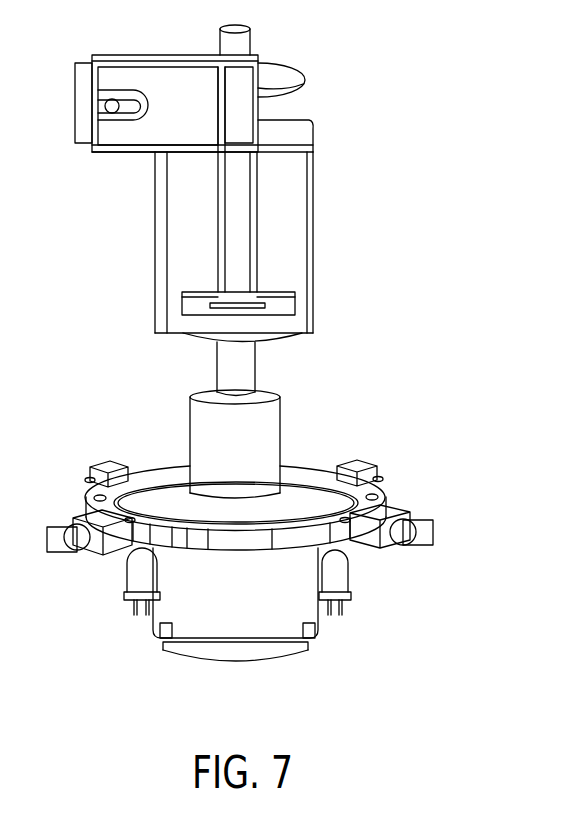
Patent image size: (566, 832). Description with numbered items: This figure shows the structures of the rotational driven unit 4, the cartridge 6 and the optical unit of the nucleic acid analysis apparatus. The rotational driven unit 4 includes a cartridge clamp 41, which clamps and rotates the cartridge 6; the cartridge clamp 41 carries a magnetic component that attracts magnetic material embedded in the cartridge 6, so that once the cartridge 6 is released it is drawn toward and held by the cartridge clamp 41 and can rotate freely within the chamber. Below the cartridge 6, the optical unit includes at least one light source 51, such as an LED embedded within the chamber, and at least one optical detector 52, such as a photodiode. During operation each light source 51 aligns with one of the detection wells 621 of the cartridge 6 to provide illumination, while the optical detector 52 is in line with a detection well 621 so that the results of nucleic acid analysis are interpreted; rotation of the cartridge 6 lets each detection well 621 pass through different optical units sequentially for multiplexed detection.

The rotational driven unit 4 is at (293, 138).
The cartridge clamp 41 is at (253, 430).
The cartridge 6 is at (350, 477).
The detection well 621 is at (390, 482).
The optical detector 52 is at (405, 528).
The light source 51 is at (340, 575).